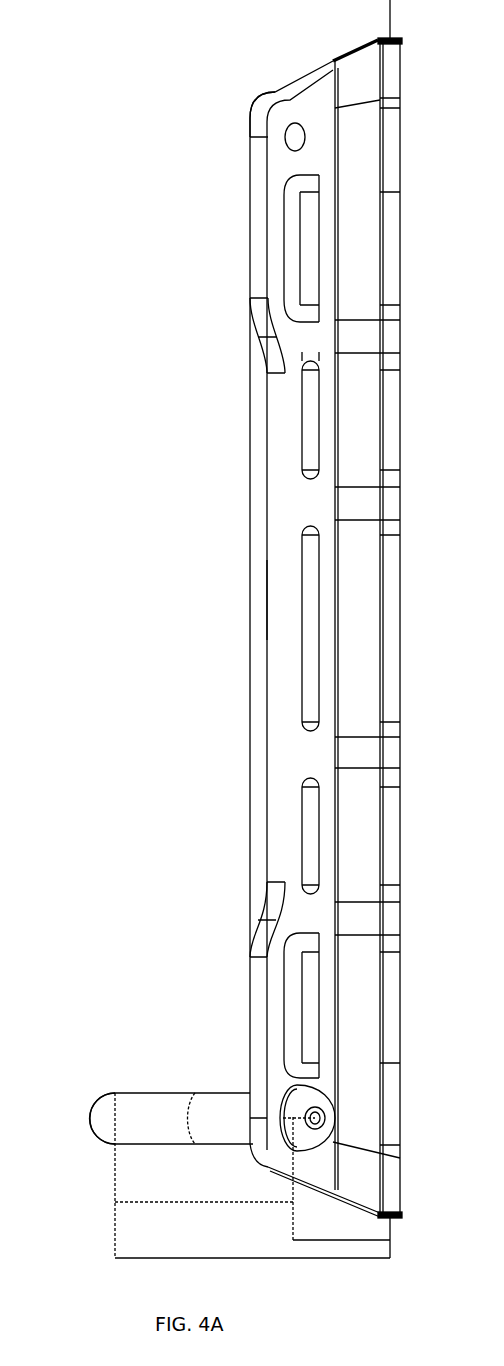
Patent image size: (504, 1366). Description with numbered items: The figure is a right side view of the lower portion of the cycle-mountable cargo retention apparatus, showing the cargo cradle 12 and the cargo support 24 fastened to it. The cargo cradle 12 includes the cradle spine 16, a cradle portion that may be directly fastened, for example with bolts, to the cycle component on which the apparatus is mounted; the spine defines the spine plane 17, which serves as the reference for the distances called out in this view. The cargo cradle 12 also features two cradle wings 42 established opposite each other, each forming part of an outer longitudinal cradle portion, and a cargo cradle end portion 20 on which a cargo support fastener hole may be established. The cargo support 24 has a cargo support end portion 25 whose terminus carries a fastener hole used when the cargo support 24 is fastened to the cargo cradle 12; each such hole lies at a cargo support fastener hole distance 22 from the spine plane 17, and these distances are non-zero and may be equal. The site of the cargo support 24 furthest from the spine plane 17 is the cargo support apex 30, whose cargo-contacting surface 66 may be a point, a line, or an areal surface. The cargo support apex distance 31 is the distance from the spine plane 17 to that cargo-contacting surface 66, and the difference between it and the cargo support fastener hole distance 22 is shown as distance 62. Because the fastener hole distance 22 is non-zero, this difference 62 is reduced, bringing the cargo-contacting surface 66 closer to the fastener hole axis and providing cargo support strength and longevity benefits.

The cargo cradle 12 is at (250, 243).
The cradle spine 16 is at (401, 263).
The spine plane 17 is at (390, 13).
The cargo cradle end portion 20 is at (250, 118).
The cargo support fastener hole distance 22 is at (352, 1240).
The cargo support 24 is at (148, 1093).
The cargo support end portion 25 is at (222, 1093).
The cargo support apex 30 is at (90, 1118).
The cargo support apex distance 31 is at (205, 1258).
The cradle wing 42 is at (267, 603).
The difference distance 62 is at (163, 1202).
The cargo-contacting surface 66 is at (115, 1093).